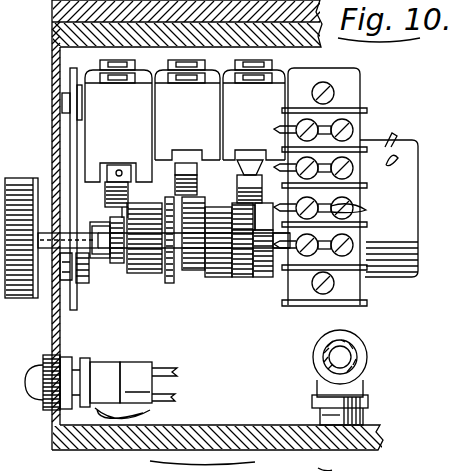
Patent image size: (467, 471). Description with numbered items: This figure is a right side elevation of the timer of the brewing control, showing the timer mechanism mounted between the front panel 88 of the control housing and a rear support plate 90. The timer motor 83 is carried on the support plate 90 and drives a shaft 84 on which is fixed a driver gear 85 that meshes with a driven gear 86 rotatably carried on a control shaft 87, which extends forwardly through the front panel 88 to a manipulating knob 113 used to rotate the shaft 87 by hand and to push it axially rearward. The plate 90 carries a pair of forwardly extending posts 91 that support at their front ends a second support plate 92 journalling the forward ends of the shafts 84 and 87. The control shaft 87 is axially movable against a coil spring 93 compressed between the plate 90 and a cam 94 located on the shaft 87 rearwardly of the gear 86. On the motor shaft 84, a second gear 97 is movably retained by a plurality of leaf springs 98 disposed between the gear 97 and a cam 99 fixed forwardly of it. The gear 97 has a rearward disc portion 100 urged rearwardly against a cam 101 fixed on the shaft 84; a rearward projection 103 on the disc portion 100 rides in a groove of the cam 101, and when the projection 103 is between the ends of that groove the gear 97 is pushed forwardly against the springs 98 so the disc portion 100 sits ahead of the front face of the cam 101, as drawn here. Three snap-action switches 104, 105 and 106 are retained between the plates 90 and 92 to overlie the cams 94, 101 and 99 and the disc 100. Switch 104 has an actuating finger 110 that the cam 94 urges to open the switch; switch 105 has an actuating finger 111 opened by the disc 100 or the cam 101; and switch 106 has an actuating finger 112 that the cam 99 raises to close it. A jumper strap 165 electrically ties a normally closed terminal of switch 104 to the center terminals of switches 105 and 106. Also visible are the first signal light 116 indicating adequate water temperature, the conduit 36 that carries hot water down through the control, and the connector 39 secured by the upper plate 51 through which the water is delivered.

The front panel 88 is at (53, 54).
The second support plate 92 is at (70, 75).
The manipulating knob 113 is at (22, 184).
The snap-action switch 106 is at (138, 115).
The snap-action switch 105 is at (203, 115).
The snap-action switch 104 is at (268, 115).
The actuating finger 112 is at (115, 164).
The actuating finger 111 is at (190, 174).
The actuating finger 110 is at (228, 163).
The driven gear 86 is at (243, 211).
The jumper strap 165 is at (452, 97).
The timer motor 83 is at (412, 190).
The control shaft 87 is at (46, 252).
The leaf springs 98 is at (117, 240).
The posts 91 is at (86, 286).
The cam 99 is at (104, 258).
The second gear 97 is at (153, 272).
The rearward disc portion 100 is at (193, 268).
The rearward projection 103 is at (220, 268).
The cam 101 is at (214, 272).
The driver gear 85 is at (241, 248).
The shaft 84 is at (254, 280).
The cam 94 is at (266, 243).
The first signal light 116 is at (138, 367).
The conduit 36 is at (357, 352).
The connector 39 is at (378, 401).
The upper plate 51 is at (246, 437).
The coil spring 93 is at (231, 461).
The support plate 90 is at (357, 463).